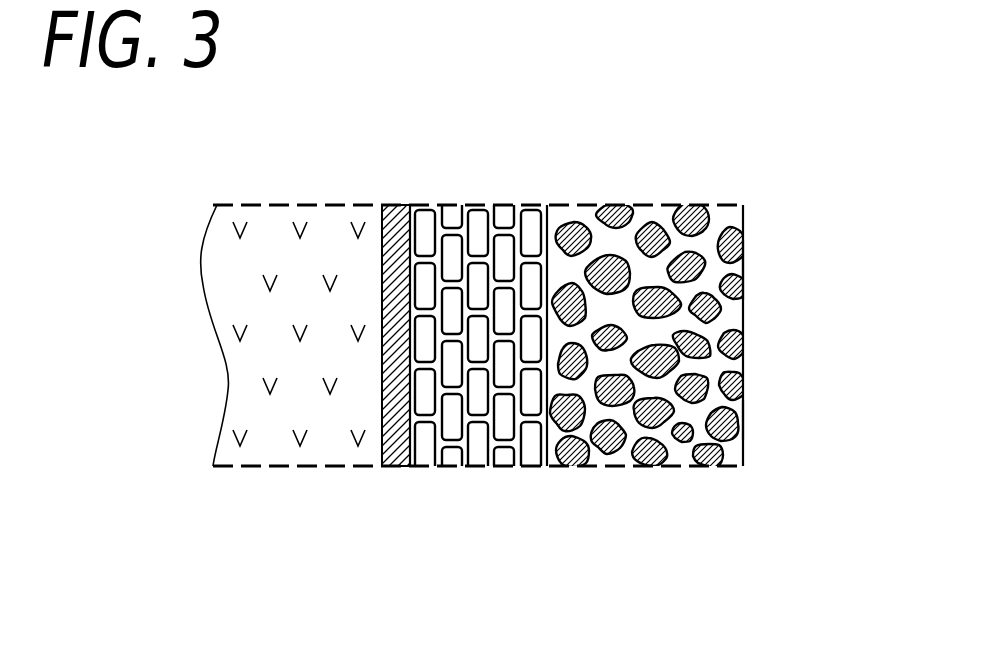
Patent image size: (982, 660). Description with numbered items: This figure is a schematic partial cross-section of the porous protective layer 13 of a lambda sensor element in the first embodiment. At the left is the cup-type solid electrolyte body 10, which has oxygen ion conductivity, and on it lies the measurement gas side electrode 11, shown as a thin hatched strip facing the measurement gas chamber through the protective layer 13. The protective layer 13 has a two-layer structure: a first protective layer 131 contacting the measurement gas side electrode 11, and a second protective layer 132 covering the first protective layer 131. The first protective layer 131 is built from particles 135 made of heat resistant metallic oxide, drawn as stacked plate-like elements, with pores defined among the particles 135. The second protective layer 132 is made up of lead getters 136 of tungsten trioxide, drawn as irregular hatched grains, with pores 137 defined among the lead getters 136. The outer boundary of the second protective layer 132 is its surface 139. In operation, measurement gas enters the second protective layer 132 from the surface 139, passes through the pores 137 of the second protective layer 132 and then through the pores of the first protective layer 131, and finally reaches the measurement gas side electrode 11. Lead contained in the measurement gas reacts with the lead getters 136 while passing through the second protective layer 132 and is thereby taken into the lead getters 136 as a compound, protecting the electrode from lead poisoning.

The solid electrolyte body 10 is at (318, 220).
The measurement gas side electrode 11 is at (398, 204).
The protective layer 13 is at (697, 555).
The first protective layer 131 is at (478, 340).
The second protective layer 132 is at (717, 340).
The particles 135 is at (455, 212).
The lead getters 136 is at (745, 418).
The pores 137 is at (701, 334).
The surface 139 is at (745, 268).